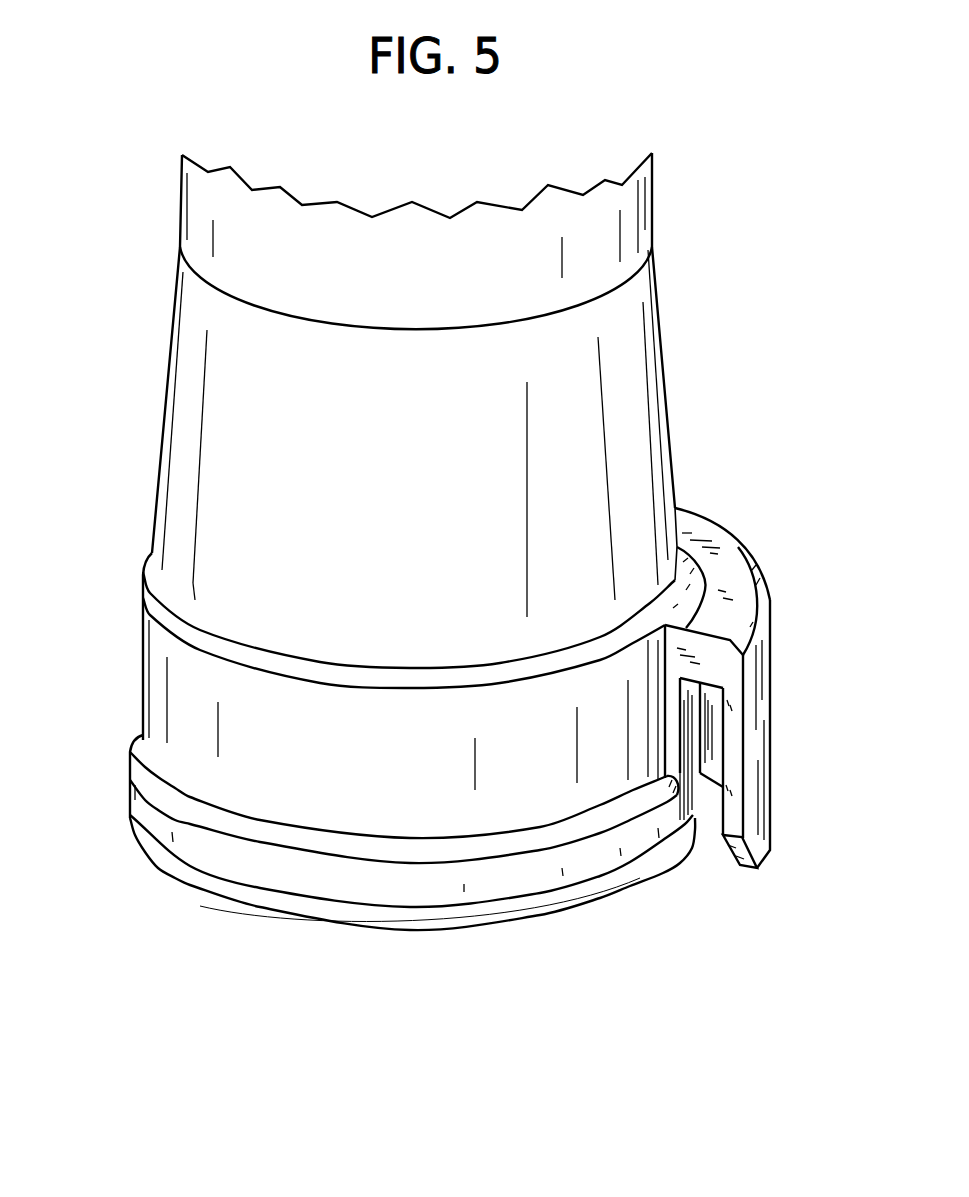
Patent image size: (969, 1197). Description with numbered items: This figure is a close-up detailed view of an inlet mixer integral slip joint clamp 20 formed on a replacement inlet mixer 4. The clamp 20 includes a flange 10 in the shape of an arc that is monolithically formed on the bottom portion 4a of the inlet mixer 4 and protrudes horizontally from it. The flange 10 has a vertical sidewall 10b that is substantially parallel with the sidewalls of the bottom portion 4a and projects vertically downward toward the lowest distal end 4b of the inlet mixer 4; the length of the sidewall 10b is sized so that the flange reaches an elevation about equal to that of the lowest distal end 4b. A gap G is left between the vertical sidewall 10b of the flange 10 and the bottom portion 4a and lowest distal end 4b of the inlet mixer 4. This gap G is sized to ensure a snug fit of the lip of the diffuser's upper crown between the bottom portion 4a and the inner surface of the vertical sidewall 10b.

The inlet mixer 4 is at (640, 382).
The bottom portion 4a is at (147, 665).
The lowest distal end 4b is at (483, 930).
The flange 10 is at (702, 650).
The vertical sidewall 10b is at (777, 612).
The inlet mixer integral slip joint clamp 20 is at (752, 527).
The gap G is at (668, 873).